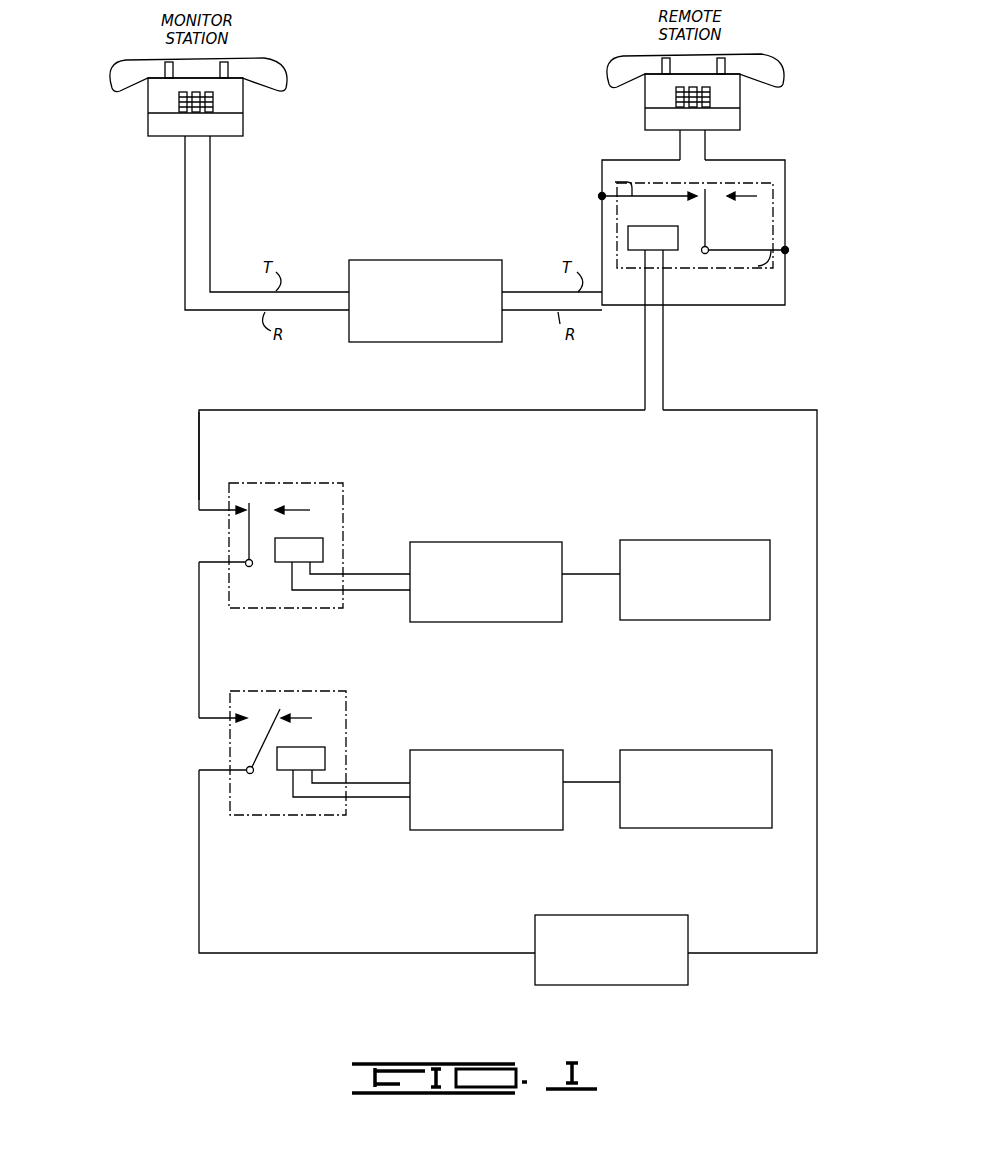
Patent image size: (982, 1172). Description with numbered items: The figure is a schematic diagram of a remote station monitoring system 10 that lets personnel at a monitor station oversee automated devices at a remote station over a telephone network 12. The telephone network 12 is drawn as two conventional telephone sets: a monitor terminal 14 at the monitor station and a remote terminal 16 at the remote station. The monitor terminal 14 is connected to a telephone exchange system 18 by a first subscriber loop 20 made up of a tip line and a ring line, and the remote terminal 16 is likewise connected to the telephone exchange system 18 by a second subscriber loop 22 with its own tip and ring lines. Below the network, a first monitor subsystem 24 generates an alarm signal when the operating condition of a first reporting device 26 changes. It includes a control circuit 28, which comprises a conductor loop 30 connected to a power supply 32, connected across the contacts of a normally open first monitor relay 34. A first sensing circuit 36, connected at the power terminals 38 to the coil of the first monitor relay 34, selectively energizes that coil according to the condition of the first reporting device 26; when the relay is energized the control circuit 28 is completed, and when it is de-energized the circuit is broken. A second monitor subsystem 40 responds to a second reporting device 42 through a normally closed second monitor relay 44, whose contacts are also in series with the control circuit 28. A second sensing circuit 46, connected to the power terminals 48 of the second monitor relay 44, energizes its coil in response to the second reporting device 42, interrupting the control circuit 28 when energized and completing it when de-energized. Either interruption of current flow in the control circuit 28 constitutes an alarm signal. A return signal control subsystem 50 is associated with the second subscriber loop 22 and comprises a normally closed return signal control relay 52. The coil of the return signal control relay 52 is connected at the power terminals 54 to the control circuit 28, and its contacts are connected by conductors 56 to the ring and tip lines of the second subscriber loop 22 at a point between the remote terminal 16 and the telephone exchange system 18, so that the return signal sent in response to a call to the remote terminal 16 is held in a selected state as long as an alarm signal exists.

The remote station monitoring system 10 is at (780, 372).
The telephone network 12 is at (383, 212).
The monitor terminal 14 is at (262, 64).
The remote terminal 16 is at (760, 58).
The telephone exchange system 18 is at (427, 260).
The first subscriber loop 20 is at (222, 312).
The second subscriber loop 22 is at (518, 290).
The first monitor subsystem 24 is at (208, 744).
The first reporting device 26 is at (693, 750).
The control circuit 28 is at (199, 432).
The conductor loop 30 is at (818, 469).
The power supply 32 is at (618, 915).
The first monitor relay 34 is at (305, 691).
The first sensing circuit 36 is at (478, 750).
The power terminals 38 is at (290, 773).
The second monitor subsystem 40 is at (205, 537).
The second reporting device 42 is at (677, 540).
The second monitor relay 44 is at (277, 483).
The second sensing circuit 46 is at (480, 542).
The power terminals 48 is at (288, 566).
The return signal control subsystem 50 is at (808, 163).
The return signal control relay 52 is at (775, 222).
The power terminals 54 is at (645, 255).
The conductors 56 is at (615, 182).